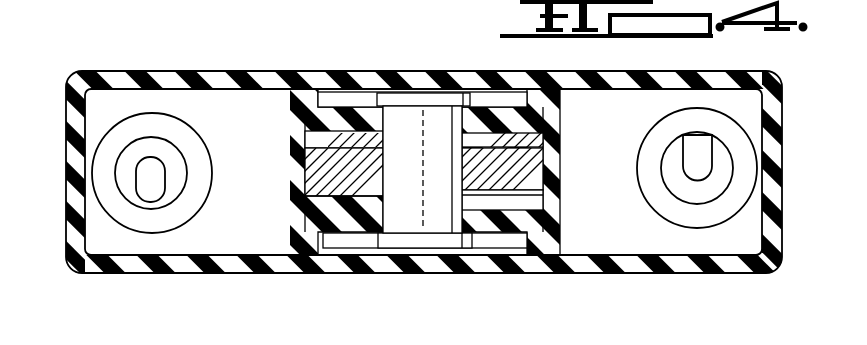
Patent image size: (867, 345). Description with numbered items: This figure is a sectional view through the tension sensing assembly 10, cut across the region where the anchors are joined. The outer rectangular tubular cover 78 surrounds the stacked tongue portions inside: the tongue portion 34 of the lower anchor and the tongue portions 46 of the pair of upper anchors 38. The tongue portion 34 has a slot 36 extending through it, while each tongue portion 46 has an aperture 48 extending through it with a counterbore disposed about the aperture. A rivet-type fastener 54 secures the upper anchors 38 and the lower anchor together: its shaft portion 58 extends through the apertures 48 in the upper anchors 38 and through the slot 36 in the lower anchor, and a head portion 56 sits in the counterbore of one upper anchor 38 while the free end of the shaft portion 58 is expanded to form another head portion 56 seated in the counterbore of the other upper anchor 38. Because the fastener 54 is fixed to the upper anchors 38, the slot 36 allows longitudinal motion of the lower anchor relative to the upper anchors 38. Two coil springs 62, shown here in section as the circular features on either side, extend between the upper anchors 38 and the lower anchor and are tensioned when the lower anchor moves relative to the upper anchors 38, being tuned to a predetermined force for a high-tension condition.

The tension sensing assembly 10 is at (68, 69).
The tongue portion 34 is at (323, 180).
The slot 36 is at (383, 176).
The upper anchor 38 is at (292, 156).
The tongue portion 46 is at (334, 137).
The aperture 48 is at (387, 137).
The fastener 54 is at (465, 219).
The head portion 56 is at (455, 98).
The shaft portion 58 is at (377, 265).
The spring 62 is at (100, 165).
The cover 78 is at (777, 74).